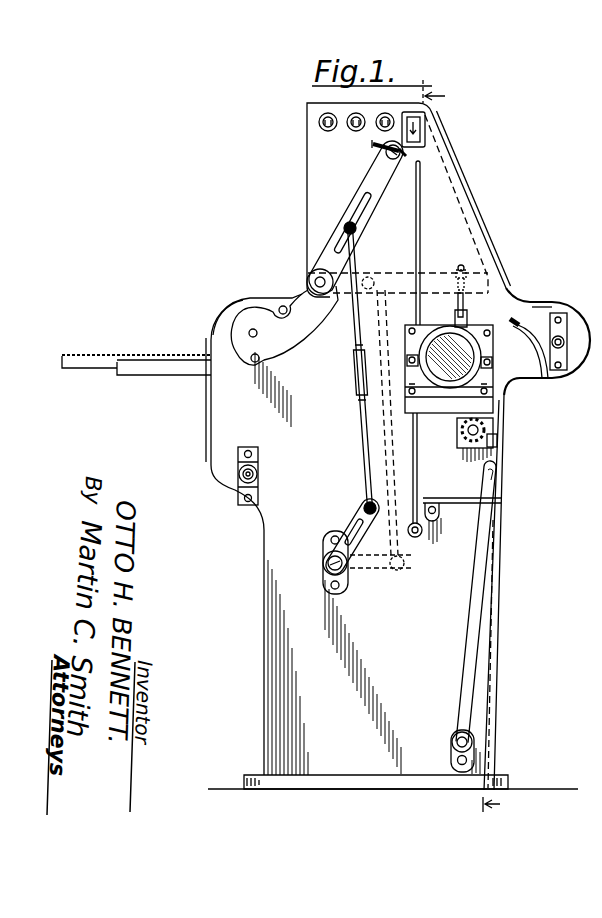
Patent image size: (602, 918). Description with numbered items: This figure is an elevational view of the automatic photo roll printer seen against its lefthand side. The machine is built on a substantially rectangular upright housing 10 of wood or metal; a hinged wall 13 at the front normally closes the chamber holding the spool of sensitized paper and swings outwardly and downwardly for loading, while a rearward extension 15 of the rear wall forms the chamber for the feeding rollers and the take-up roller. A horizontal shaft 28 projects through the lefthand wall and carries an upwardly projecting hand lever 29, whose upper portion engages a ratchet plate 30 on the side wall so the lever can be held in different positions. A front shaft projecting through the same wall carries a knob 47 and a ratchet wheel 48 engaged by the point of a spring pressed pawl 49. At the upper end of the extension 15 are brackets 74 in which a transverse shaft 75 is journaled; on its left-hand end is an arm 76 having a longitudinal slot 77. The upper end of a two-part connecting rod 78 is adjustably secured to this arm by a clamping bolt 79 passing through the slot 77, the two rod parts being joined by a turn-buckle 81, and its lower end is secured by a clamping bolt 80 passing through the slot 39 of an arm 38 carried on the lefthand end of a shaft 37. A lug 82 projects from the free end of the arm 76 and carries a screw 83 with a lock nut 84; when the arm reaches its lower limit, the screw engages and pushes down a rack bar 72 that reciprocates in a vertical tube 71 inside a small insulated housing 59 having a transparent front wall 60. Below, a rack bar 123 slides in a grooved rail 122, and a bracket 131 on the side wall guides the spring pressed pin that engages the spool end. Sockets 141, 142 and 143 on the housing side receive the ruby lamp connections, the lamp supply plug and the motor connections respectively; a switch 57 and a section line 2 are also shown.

The section line 2- 2 is at (468, 449).
The housing 10 is at (256, 700).
The wall 13 is at (523, 379).
The rearward extension of rear wall 15 is at (227, 321).
The shaft 28 is at (468, 742).
The hand lever 29 is at (472, 667).
The ratchet plate 30 is at (463, 504).
The shaft 37 is at (330, 566).
The arm 38 is at (343, 540).
The slot 39 is at (360, 533).
The knob 47 is at (462, 431).
The ratchet wheel 48 is at (462, 449).
The spring pressed pawl 49 is at (497, 441).
The switch 57 is at (412, 135).
The small housing 59 is at (425, 403).
The transparent front wall 60 is at (468, 371).
The tube 71 is at (458, 325).
The rack bar 72 is at (463, 302).
The bracket 74 is at (295, 335).
The shaft 75 is at (311, 281).
The arm 76 is at (372, 190).
The slot 77 is at (360, 208).
The two-part connecting rod 78 is at (358, 440).
The clamping bolt 79 is at (344, 228).
The clamping bolt 80 is at (364, 506).
The turn-buckle 81 is at (355, 385).
The lug 82 is at (388, 162).
The screw 83 is at (407, 157).
The lock nut 84 is at (384, 153).
The grooved rail 122 is at (190, 371).
The rack bar 123 is at (78, 357).
The bracket 131 is at (244, 488).
The socket 141 is at (378, 130).
The socket 142 is at (350, 129).
The socket 143 is at (318, 122).